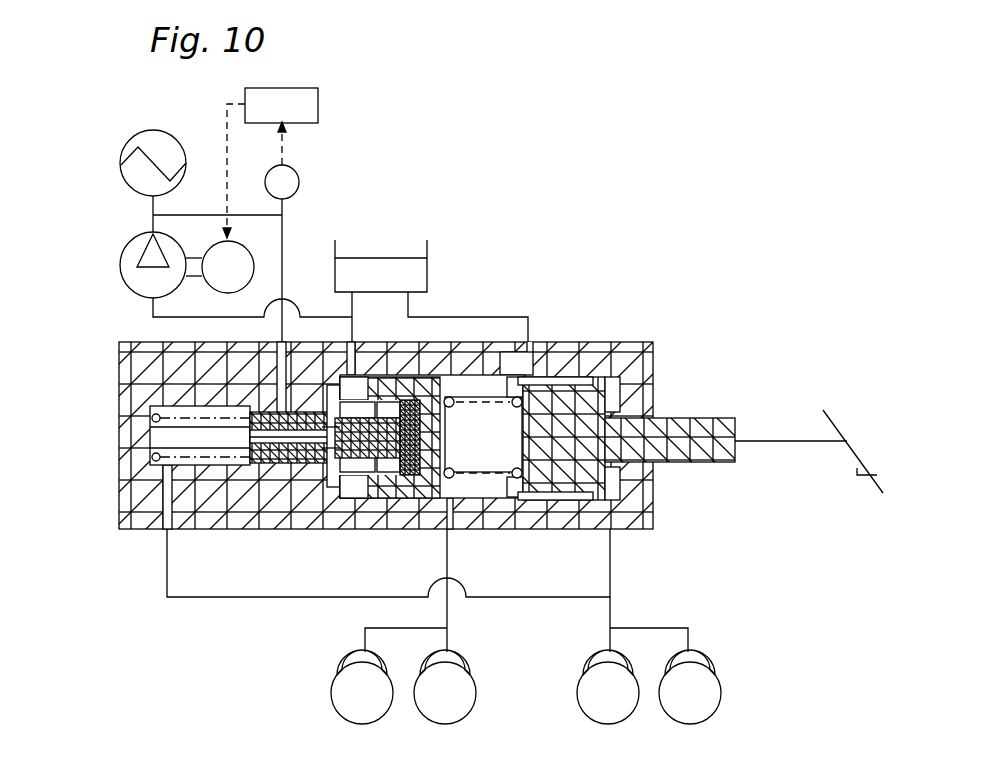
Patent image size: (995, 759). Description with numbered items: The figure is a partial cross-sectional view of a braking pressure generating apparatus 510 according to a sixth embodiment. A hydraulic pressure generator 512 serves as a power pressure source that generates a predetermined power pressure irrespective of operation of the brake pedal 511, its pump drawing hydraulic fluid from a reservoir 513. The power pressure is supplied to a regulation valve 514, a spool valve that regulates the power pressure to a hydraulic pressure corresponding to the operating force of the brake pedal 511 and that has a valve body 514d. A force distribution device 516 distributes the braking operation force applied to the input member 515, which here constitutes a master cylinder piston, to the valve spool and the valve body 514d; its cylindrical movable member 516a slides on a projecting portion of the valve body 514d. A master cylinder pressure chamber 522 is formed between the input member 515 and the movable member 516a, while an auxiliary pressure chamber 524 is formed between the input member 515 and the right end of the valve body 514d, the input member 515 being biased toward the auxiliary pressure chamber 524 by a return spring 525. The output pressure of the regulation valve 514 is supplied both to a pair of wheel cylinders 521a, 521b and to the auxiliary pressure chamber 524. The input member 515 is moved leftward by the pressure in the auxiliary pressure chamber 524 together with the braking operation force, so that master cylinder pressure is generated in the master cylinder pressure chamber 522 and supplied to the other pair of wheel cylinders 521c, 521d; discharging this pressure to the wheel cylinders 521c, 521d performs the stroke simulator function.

The braking pressure generating apparatus 510 is at (445, 461).
The brake pedal 511 is at (809, 417).
The hydraulic pressure generator 512 is at (191, 215).
The reservoir 513 is at (431, 289).
The regulation valve 514 is at (386, 509).
The valve body 514d is at (634, 393).
The input member 515 is at (633, 429).
The force distribution device 516 is at (315, 501).
The movable member 516a is at (370, 501).
The wheel cylinder 521a is at (578, 660).
The wheel cylinder 521b is at (713, 673).
The wheel cylinder 521c is at (357, 664).
The wheel cylinder 521d is at (490, 626).
The master cylinder pressure chamber 522 is at (447, 377).
The auxiliary pressure chamber 524 is at (688, 448).
The return spring 525 is at (501, 493).